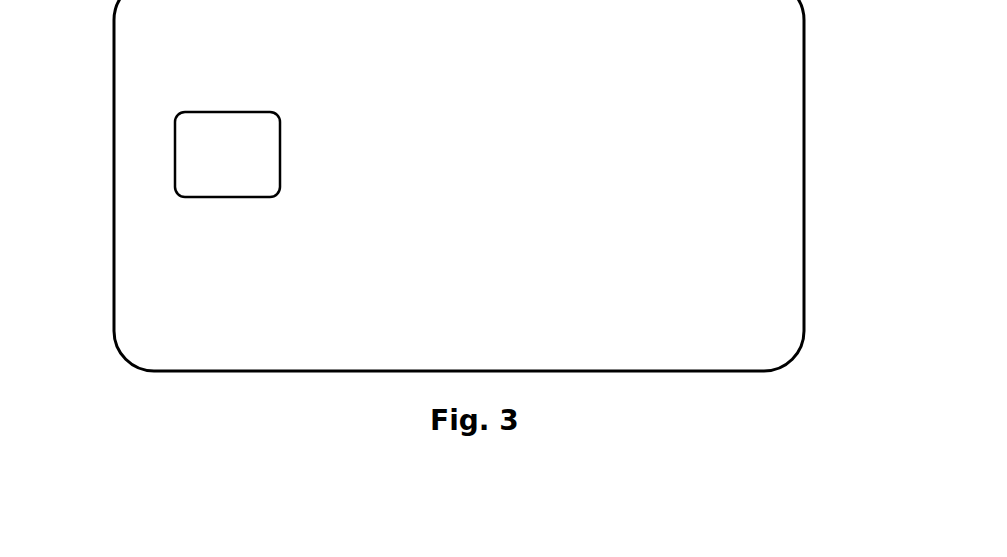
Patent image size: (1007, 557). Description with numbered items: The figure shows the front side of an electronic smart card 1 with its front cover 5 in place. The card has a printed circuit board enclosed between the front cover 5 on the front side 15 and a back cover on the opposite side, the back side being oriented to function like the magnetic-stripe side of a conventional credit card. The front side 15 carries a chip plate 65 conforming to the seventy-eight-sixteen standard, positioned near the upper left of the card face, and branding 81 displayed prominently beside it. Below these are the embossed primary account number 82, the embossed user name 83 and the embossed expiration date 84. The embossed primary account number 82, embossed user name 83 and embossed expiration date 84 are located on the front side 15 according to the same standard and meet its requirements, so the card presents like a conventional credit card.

The electronic smart card 1 is at (295, 392).
The front cover 5 is at (632, 307).
The front side 15 is at (642, 407).
The 7816 chip plate 65 is at (197, 153).
The branding 81 is at (660, 160).
The embossed primary account number 82 is at (232, 258).
The embossed user name 83 is at (277, 333).
The embossed expiration date 84 is at (525, 336).